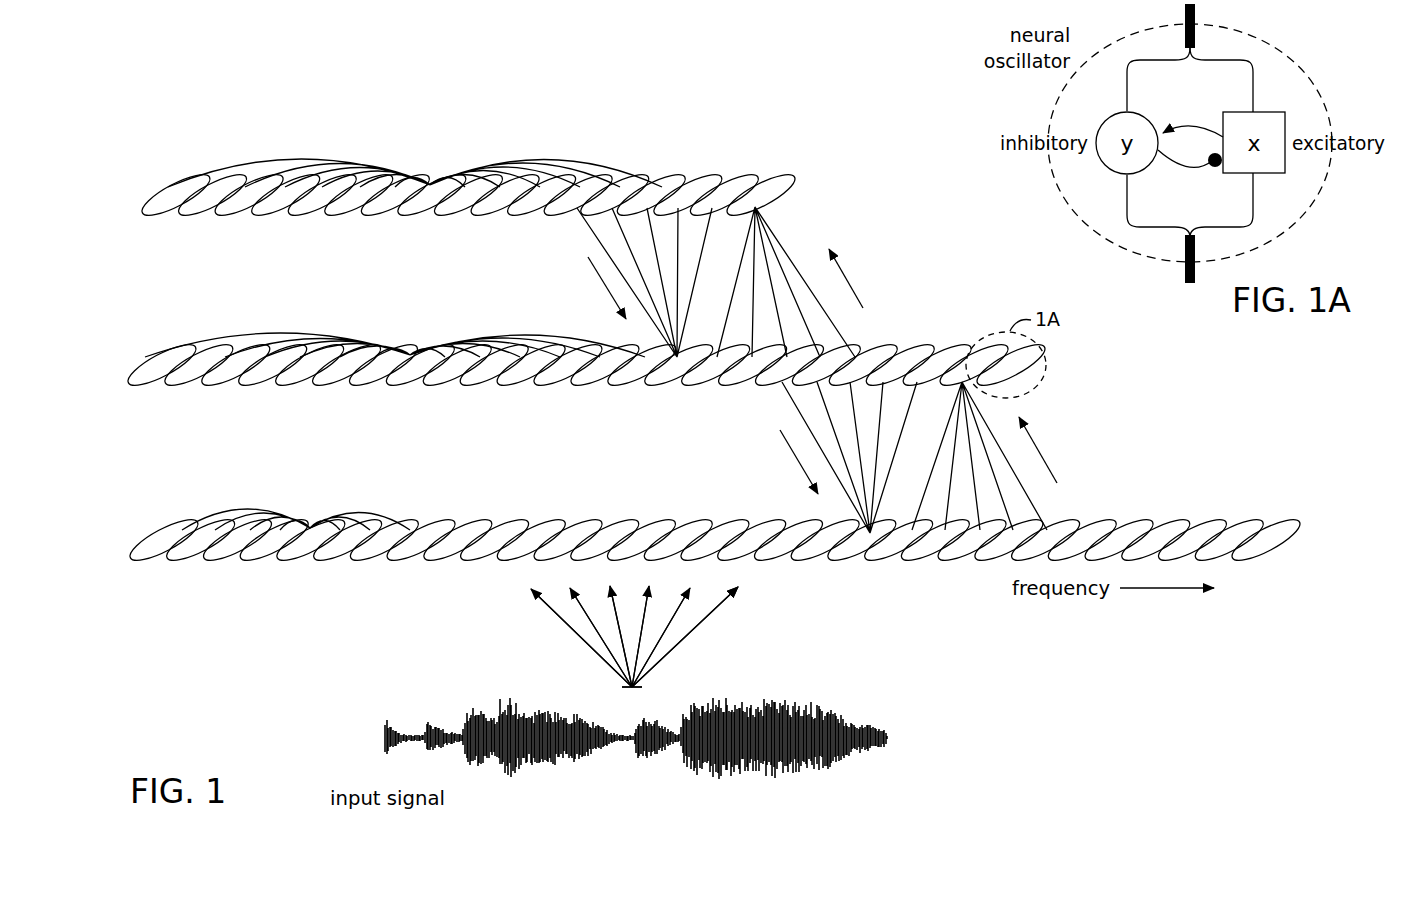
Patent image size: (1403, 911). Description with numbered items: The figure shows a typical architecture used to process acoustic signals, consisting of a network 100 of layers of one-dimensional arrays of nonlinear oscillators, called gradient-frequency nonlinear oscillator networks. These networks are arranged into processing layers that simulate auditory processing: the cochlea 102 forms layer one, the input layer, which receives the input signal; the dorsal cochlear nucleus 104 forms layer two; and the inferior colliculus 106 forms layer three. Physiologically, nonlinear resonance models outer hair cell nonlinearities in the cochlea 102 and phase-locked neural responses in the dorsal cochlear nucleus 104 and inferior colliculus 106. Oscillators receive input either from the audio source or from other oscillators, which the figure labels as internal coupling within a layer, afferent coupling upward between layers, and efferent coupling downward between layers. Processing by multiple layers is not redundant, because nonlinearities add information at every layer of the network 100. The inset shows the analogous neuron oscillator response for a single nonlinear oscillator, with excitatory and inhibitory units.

The network 100 is at (851, 199).
The cochlea 102 is at (160, 539).
The dorsal cochlear nucleus 104 is at (163, 366).
The inferior colliculus 106 is at (172, 184).